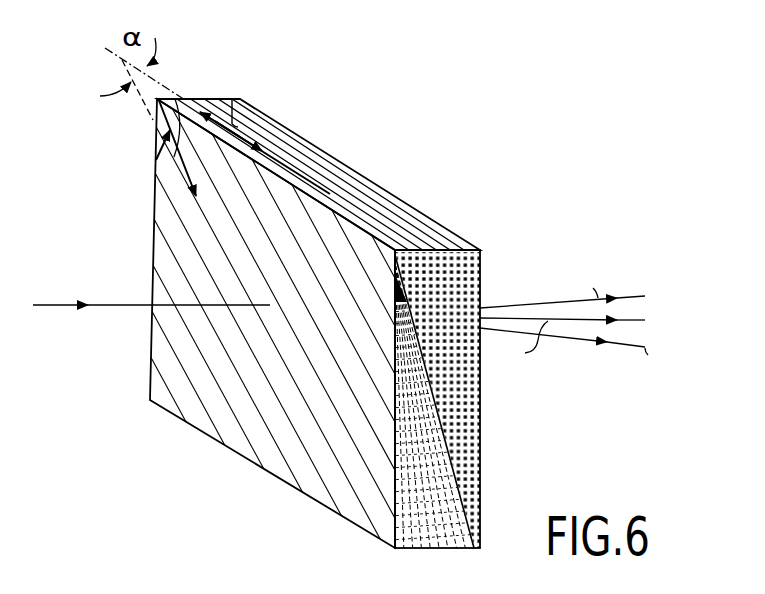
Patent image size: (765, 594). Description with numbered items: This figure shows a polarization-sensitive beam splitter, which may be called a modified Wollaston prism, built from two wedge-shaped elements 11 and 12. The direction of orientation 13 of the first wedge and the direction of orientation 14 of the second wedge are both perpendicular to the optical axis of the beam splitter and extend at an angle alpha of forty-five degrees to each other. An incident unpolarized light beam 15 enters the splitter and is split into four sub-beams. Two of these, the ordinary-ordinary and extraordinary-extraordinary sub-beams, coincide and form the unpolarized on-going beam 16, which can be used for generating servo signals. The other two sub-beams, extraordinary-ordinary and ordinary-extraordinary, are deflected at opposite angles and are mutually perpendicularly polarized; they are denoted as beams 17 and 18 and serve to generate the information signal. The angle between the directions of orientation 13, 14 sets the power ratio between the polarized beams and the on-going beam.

The wedge-shaped element 11 is at (430, 232).
The wedge-shaped element 12 is at (231, 424).
The direction of orientation 13 is at (232, 98).
The direction of orientation 14 is at (174, 157).
The incident unpolarized light beam 15 is at (50, 304).
The on-going beam 16 is at (638, 320).
The deflected polarized sub-beam 17 is at (613, 344).
The deflected polarized sub-beam 18 is at (562, 286).